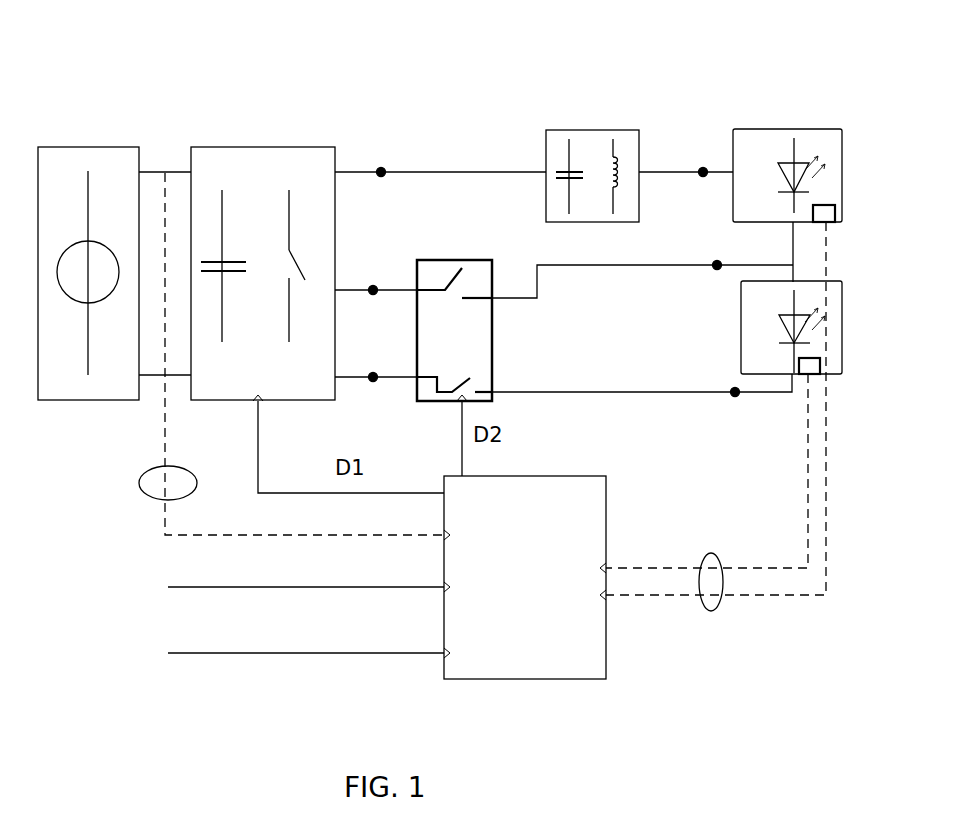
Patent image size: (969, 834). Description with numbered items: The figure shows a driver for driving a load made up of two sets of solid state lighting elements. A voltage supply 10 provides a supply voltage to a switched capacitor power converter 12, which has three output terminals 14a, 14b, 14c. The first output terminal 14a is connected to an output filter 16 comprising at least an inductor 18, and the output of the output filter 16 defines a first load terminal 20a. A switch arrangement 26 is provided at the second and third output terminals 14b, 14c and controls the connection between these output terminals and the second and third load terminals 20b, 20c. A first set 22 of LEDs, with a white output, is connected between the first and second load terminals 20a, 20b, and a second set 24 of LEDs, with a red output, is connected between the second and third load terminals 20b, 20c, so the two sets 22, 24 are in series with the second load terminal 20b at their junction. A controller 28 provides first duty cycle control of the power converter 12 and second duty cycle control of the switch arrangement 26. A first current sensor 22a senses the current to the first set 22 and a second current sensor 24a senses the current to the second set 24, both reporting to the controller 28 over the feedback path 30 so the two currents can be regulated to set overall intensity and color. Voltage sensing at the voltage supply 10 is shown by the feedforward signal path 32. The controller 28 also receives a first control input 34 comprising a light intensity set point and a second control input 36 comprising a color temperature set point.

The voltage supply 10 is at (67, 148).
The switched capacitor power converter 12 is at (253, 147).
The first output terminal 14a is at (381, 172).
The second output terminal 14b is at (373, 290).
The third output terminal 14c is at (373, 377).
The output filter 16 is at (566, 130).
The inductor 18 is at (610, 162).
The first load terminal 20a is at (703, 172).
The second load terminal 20b is at (717, 265).
The third load terminal 20c is at (735, 392).
The first set of solid state lighting elements 22 is at (802, 129).
The first current sensor 22a is at (813, 208).
The second set of solid state lighting elements 24 is at (741, 345).
The second current sensor 24a is at (799, 367).
The switch arrangement 26 is at (492, 328).
The controller 28 is at (606, 540).
The feedback path 30 is at (717, 606).
The feedforward signal path 32 is at (147, 492).
The first control input 34 is at (260, 585).
The second control input 36 is at (272, 652).